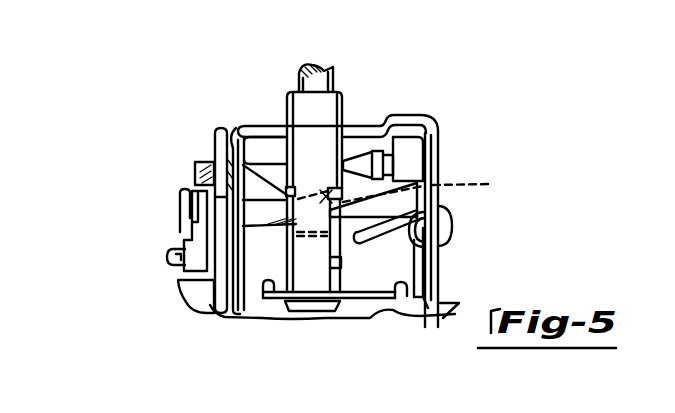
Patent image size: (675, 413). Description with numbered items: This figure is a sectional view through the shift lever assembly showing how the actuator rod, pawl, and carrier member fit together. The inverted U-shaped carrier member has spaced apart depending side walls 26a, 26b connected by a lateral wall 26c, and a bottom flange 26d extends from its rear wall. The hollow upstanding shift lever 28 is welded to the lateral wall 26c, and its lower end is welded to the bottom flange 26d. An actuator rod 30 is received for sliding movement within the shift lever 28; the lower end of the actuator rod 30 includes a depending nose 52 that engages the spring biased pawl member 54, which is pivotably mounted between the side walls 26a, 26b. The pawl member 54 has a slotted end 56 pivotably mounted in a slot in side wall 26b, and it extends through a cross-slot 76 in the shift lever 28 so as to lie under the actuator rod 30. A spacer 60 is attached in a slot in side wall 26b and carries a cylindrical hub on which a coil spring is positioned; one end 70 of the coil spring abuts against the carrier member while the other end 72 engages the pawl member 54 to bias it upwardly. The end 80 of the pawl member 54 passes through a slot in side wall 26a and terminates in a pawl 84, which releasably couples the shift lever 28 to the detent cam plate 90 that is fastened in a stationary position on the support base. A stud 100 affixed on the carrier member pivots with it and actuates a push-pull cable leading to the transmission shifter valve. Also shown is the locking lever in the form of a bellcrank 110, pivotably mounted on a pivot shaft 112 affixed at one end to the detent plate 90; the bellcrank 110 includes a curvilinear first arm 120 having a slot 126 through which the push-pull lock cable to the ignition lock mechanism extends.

The actuator rod 30 is at (309, 66).
The side wall 26a is at (238, 148).
The side wall 26b is at (440, 141).
The lateral wall 26c is at (352, 128).
The bottom flange 26d is at (381, 299).
The stud 100 is at (398, 150).
The depending nose 52 is at (413, 188).
The slotted end 56 is at (450, 223).
The spacer 60 is at (441, 276).
The end of coil spring 70 is at (410, 314).
The cross-slot 76 is at (339, 259).
The shift lever 28 is at (306, 284).
The pawl member 54 is at (270, 250).
The end of coil spring 72 is at (362, 243).
The detent cam plate 90 is at (216, 128).
The end of pawl member 80 is at (190, 135).
The pawl 84 is at (195, 166).
The slot 126 is at (180, 200).
The bellcrank 110 is at (158, 218).
The first arm 120 is at (173, 242).
The pivot shaft 112 is at (180, 271).